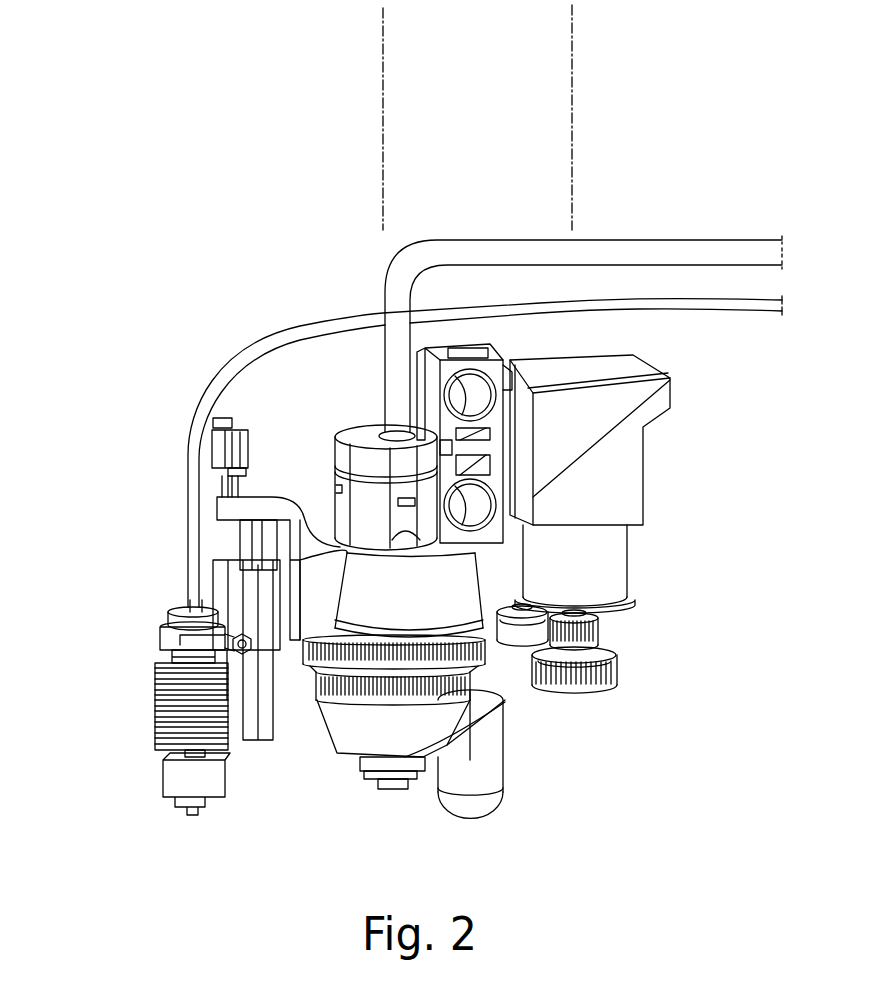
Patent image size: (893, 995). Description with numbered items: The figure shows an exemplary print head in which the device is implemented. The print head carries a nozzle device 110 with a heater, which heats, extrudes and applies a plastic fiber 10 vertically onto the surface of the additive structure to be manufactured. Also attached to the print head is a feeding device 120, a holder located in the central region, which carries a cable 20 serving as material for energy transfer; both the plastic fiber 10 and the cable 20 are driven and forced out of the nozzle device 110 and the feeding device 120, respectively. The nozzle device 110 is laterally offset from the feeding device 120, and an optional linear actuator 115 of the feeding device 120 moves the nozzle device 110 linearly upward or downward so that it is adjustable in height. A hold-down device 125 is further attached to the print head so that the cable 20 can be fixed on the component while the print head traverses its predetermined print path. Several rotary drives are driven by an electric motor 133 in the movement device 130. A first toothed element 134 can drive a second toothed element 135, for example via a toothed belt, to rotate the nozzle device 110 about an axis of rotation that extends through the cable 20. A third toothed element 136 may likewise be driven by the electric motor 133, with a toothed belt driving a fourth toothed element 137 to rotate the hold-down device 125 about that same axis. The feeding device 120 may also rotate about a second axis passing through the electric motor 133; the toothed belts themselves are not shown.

The plastic fiber 10 is at (212, 364).
The cable 20 is at (384, 270).
The nozzle device 110 is at (154, 707).
The linear actuator 115 is at (230, 535).
The feeding device 120 is at (357, 769).
The hold-down device 125 is at (508, 794).
The movement device 130 is at (632, 552).
The electric motor 133 is at (625, 467).
The first toothed element 134 is at (600, 630).
The second toothed element 135 is at (488, 645).
The third toothed element 136 is at (618, 664).
The fourth toothed element 137 is at (470, 678).